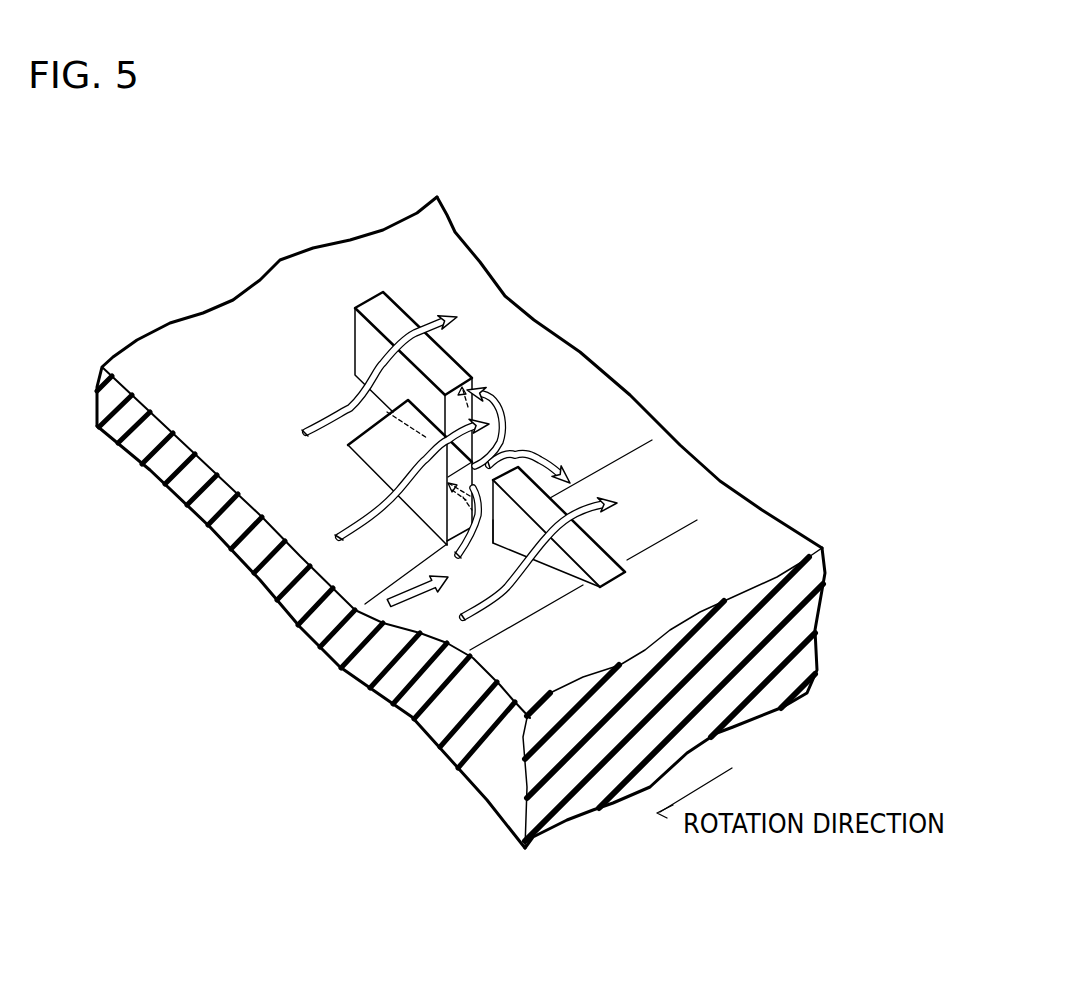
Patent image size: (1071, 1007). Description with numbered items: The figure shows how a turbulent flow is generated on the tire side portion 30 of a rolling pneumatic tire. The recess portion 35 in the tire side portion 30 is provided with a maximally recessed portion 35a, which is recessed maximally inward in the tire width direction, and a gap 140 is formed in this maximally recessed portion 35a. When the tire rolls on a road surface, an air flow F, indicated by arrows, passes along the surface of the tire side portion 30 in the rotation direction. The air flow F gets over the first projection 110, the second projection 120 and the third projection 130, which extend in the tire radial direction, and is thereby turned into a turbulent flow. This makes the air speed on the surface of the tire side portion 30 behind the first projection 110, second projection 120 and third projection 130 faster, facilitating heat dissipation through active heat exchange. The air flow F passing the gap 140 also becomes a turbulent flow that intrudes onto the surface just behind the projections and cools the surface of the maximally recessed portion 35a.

The tire side portion 30 is at (389, 232).
The recess portion 35 is at (613, 423).
The maximally recessed portion 35a is at (657, 423).
The first projection 110 is at (595, 553).
The second projection 120 is at (432, 490).
The third projection 130 is at (443, 363).
The gap 140 is at (495, 522).
The air flow F is at (425, 582).